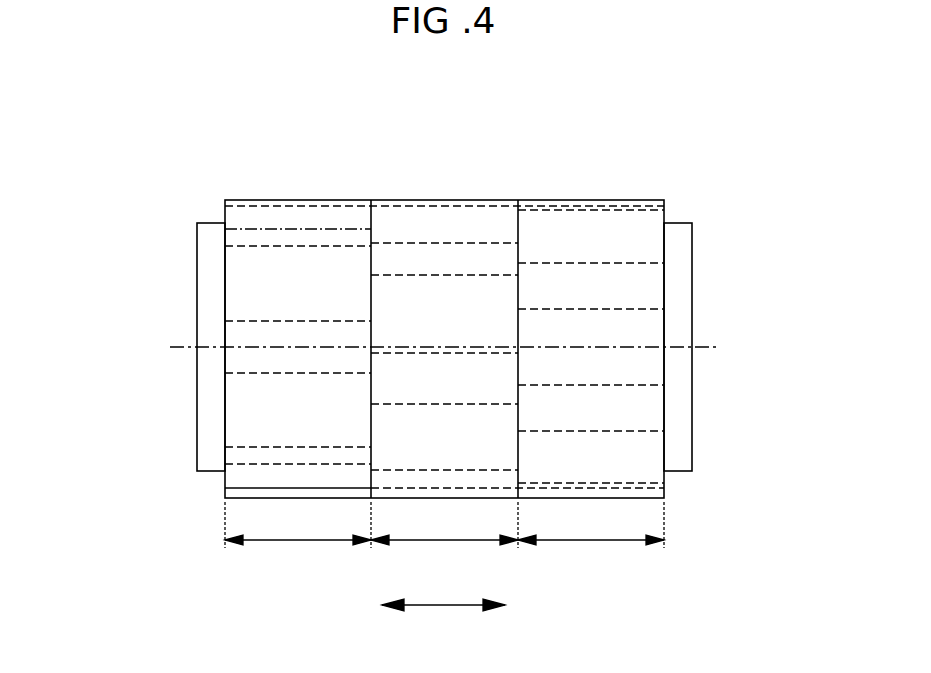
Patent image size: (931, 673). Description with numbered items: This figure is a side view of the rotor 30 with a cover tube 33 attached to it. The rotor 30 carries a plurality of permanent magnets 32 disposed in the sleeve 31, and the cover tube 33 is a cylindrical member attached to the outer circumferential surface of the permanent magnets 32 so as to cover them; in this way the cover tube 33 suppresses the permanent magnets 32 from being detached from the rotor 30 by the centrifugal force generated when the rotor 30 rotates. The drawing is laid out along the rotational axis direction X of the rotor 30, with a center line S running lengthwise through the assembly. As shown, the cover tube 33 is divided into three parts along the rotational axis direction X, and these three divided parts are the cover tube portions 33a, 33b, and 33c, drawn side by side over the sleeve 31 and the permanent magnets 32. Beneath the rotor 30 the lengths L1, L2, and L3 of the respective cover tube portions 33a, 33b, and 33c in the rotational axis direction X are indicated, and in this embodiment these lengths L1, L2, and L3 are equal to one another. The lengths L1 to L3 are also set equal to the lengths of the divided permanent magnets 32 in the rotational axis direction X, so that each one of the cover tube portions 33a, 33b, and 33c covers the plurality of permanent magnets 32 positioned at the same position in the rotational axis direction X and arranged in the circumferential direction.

The rotor 30 is at (700, 206).
The sleeve 31 is at (692, 241).
The permanent magnet 32 is at (287, 248).
The cover tube 33 is at (283, 132).
The cover tube portion 33a is at (321, 200).
The cover tube portion 33b is at (441, 200).
The cover tube portion 33c is at (560, 200).
The central axis S is at (185, 347).
The rotational axis direction X is at (445, 606).
The length of cover tube portion L1 is at (298, 537).
The length of cover tube portion L2 is at (444, 537).
The length of cover tube portion L3 is at (591, 537).